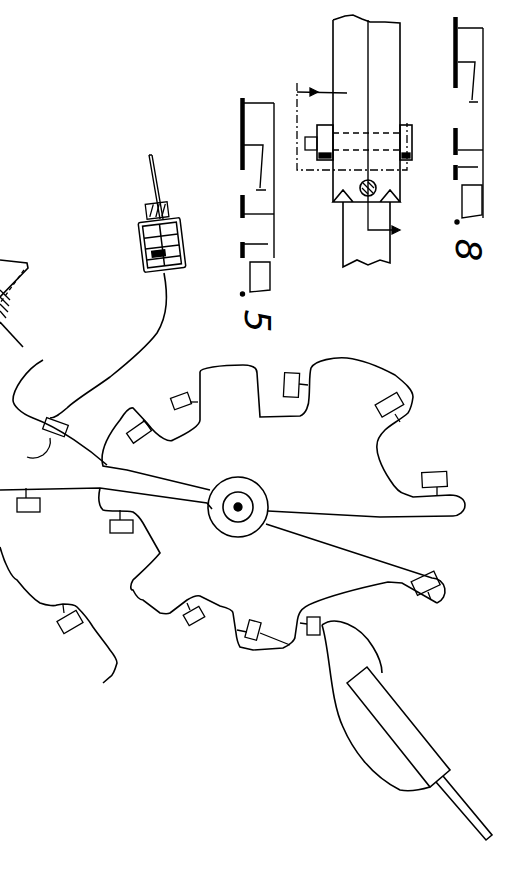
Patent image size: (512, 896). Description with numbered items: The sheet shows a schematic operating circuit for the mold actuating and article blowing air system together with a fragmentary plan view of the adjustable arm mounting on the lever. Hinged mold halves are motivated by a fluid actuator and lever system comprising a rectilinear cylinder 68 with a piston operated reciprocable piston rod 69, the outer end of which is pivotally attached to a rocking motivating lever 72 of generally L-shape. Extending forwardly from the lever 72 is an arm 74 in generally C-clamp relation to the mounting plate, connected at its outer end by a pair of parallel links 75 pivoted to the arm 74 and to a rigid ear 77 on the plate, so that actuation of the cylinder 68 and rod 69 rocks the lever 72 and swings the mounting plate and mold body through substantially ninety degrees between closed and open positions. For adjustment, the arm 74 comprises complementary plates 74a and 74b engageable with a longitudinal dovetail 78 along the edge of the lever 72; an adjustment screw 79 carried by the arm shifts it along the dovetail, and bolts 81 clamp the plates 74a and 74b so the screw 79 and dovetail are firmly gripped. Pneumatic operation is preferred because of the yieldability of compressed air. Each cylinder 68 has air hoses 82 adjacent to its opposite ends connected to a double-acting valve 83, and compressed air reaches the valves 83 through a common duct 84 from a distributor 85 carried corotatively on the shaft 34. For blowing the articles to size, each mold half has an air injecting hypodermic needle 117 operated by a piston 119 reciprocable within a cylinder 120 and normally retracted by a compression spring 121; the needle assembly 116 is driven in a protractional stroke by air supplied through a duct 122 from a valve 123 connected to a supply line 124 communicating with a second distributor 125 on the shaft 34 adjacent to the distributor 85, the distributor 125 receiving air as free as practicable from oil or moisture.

In FIG. 5, the shaft 34 is at (240, 511).
In FIG. 5, the rectilinear cylinder 68 is at (408, 725).
In FIG. 5, the piston rod 69 is at (463, 803).
In FIG. 8, the rocking motivating lever 72 is at (373, 253).
In FIG. 5, the arm 74 is at (18, 312).
In FIG. 8, the arm 74 is at (402, 42).
In FIG. 8, the complementary plate 74a is at (392, 75).
In FIG. 8, the complementary plate 74b is at (323, 90).
In FIG. 5, the parallel links 75 is at (0, 228).
In FIG. 5, the rigid ear 77 is at (0, 200).
In FIG. 8, the longitudinal dovetail 78 is at (393, 200).
In FIG. 8, the adjustment screw 79 is at (335, 182).
In FIG. 5, the bolts 81 is at (8, 378).
In FIG. 8, the bolts 81 is at (405, 150).
In FIG. 5, the air hoses 82 is at (340, 667).
In FIG. 5, the double-acting valve 83 is at (117, 533).
In FIG. 5, the common duct 84 is at (243, 650).
In FIG. 5, the distributor 85 is at (256, 531).
In FIG. 5, the gauge housing 116 is at (168, 218).
In FIG. 5, the air injecting hypodermic needle 117 is at (157, 170).
In FIG. 5, the piston 119 is at (167, 273).
In FIG. 5, the cylinder 120 is at (183, 267).
In FIG. 5, the compression spring 121 is at (183, 236).
In FIG. 5, the duct 122 is at (157, 333).
In FIG. 5, the valve 123 is at (67, 428).
In FIG. 5, the supply line 124 is at (37, 441).
In FIG. 5, the distributor 125 is at (257, 492).